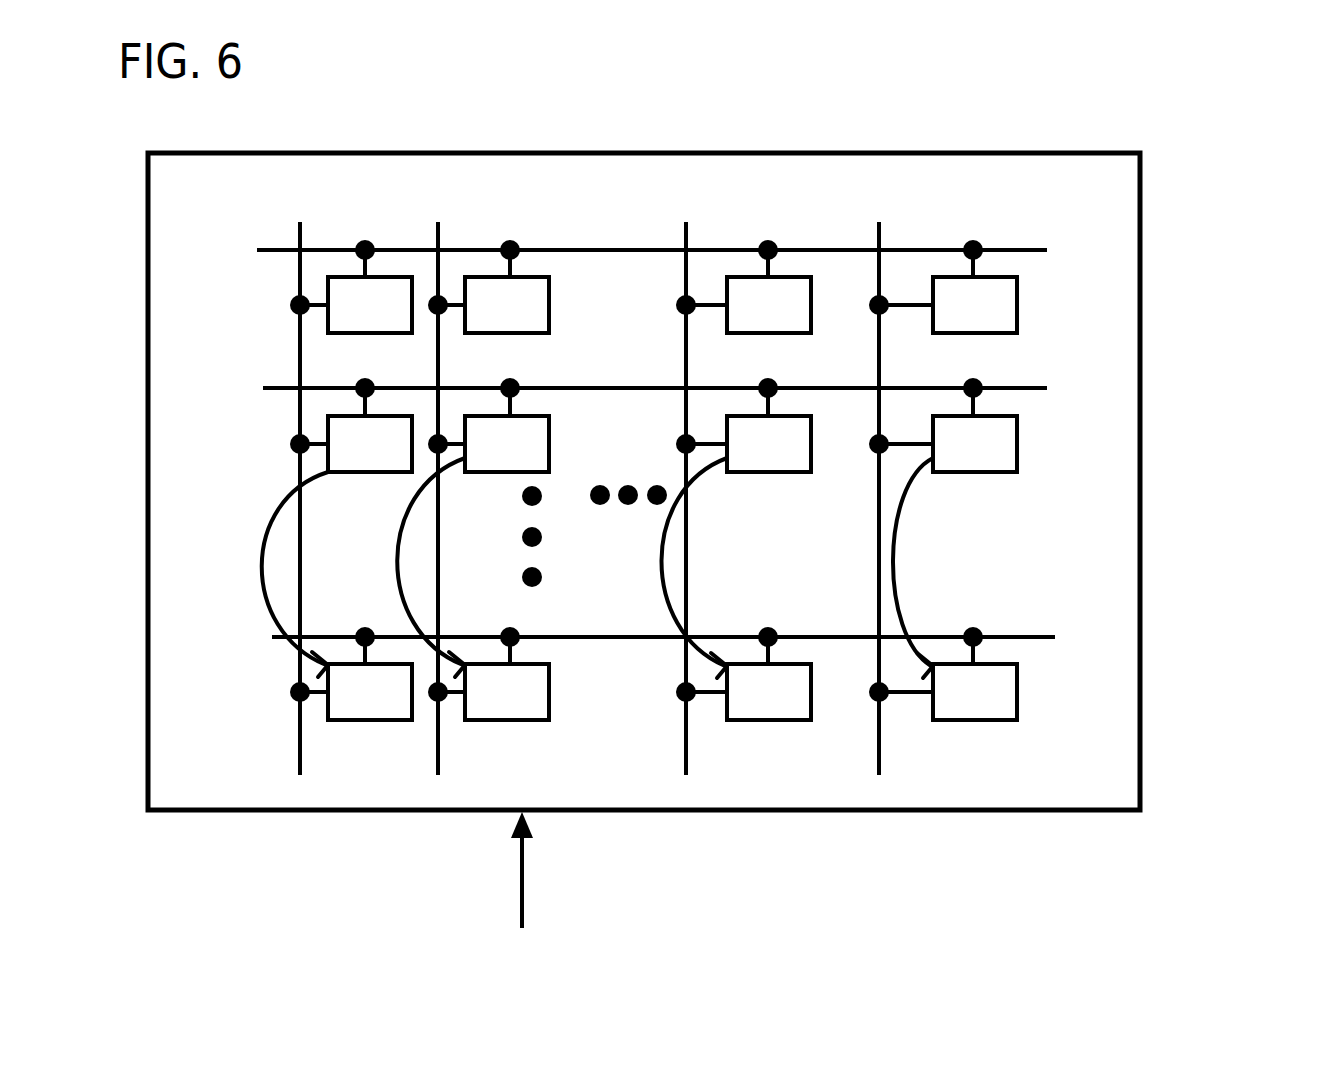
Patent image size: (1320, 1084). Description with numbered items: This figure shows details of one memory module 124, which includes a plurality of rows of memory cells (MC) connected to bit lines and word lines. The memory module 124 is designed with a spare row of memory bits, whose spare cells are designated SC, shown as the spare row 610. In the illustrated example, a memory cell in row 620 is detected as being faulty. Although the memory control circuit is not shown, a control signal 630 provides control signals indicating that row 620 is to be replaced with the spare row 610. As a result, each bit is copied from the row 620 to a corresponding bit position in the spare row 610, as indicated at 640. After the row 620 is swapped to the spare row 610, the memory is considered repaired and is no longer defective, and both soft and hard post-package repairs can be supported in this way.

The memory module 124 is at (747, 119).
The spare row 610 is at (1055, 692).
The row 620 is at (1040, 443).
The control signal 630 is at (658, 888).
The copying of bits 640 is at (923, 538).